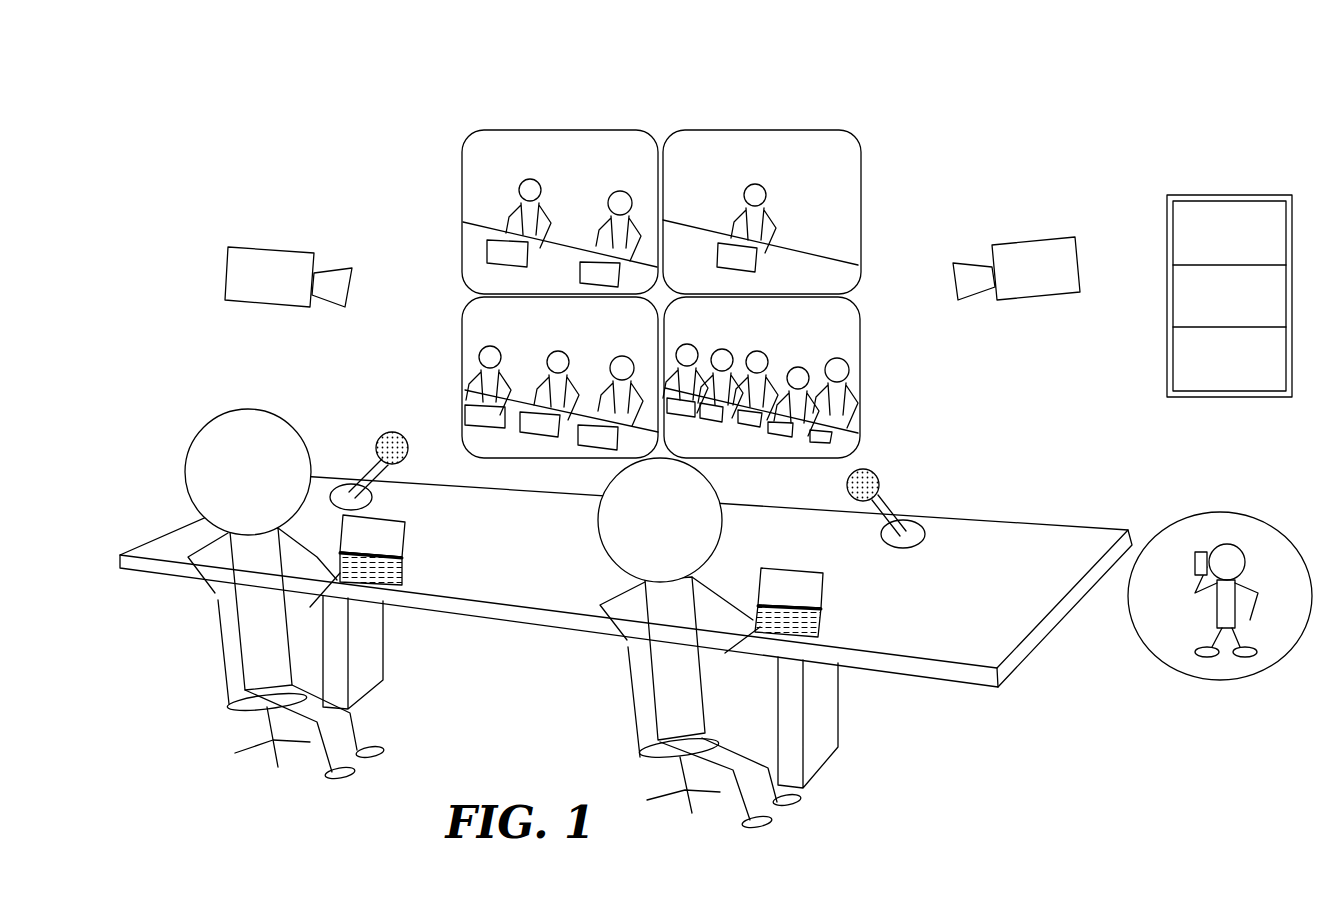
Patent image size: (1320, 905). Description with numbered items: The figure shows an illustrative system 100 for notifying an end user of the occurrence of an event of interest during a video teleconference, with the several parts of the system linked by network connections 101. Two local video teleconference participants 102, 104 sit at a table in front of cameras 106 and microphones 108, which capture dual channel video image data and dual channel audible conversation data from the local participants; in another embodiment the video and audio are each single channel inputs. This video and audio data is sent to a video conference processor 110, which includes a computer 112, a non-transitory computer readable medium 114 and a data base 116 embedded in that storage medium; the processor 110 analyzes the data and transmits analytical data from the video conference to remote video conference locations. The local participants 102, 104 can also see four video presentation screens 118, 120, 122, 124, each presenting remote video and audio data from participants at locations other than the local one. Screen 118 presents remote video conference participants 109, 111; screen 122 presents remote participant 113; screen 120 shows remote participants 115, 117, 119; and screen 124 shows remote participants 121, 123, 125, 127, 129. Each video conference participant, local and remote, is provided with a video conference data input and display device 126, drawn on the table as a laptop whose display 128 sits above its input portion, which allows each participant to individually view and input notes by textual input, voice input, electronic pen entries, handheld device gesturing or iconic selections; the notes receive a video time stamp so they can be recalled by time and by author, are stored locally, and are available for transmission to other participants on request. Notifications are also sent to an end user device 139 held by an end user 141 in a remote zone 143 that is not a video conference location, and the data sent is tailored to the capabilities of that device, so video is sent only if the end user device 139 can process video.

The videoconferencing system 100 is at (851, 60).
The network connection 101 is at (672, 405).
The local video teleconference participant 102 is at (253, 668).
The local video teleconference participant 104 is at (668, 718).
The camera 106 is at (273, 257).
The microphone 108 is at (387, 447).
The remote video conference participant 109 is at (530, 182).
The video conference processor 110 is at (1237, 197).
The remote video conference participant 111 is at (622, 192).
The computer 112 is at (1178, 238).
The remote video conference participant 113 is at (757, 187).
The non-transitory computer readable medium 114 is at (1178, 310).
The remote video conference participant 115 is at (490, 350).
The data base 116 is at (1180, 375).
The remote video conference participant 117 is at (557, 355).
The video presentation screen 118 is at (472, 138).
The remote video conference participant 119 is at (623, 362).
The video presentation screen 120 is at (467, 313).
The remote video conference participant 121 is at (688, 352).
The video presentation screen 122 is at (852, 138).
The remote video conference participant 123 is at (727, 357).
The video presentation screen 124 is at (848, 313).
The remote video conference participant 125 is at (762, 363).
The video conference data input and display device 126 is at (500, 255).
The remote video conference participant 127 is at (800, 373).
The laptop display 128 is at (400, 533).
The remote video conference participant 129 is at (845, 380).
The end user device 139 is at (1200, 563).
The end user 141 is at (1223, 613).
The remote zone 143 is at (1267, 533).